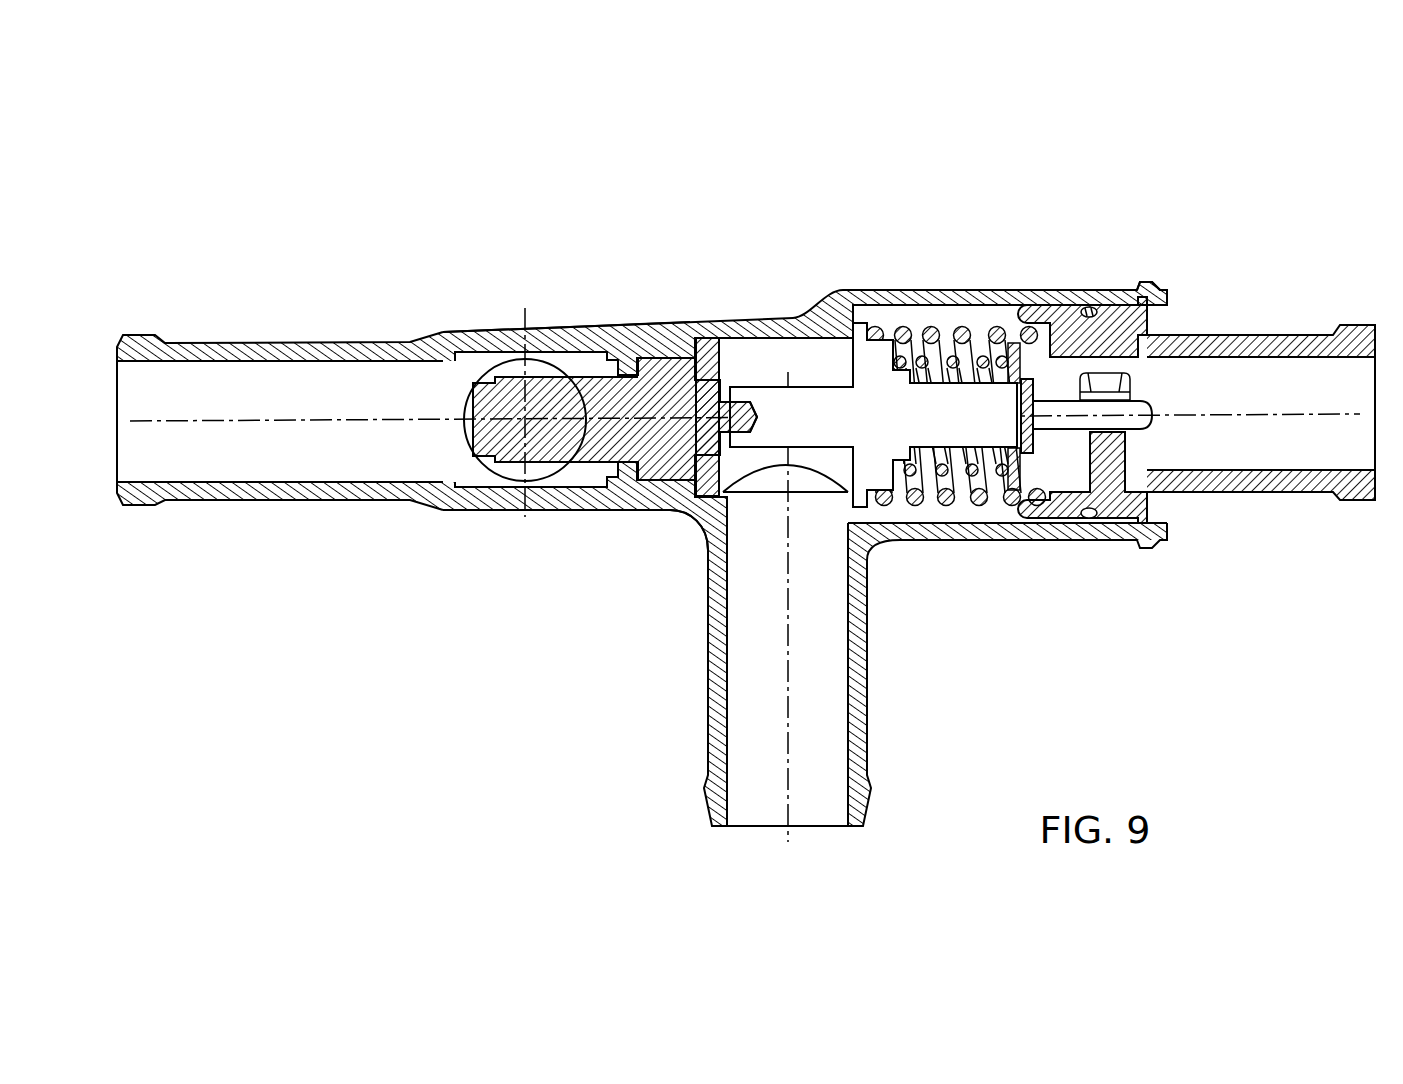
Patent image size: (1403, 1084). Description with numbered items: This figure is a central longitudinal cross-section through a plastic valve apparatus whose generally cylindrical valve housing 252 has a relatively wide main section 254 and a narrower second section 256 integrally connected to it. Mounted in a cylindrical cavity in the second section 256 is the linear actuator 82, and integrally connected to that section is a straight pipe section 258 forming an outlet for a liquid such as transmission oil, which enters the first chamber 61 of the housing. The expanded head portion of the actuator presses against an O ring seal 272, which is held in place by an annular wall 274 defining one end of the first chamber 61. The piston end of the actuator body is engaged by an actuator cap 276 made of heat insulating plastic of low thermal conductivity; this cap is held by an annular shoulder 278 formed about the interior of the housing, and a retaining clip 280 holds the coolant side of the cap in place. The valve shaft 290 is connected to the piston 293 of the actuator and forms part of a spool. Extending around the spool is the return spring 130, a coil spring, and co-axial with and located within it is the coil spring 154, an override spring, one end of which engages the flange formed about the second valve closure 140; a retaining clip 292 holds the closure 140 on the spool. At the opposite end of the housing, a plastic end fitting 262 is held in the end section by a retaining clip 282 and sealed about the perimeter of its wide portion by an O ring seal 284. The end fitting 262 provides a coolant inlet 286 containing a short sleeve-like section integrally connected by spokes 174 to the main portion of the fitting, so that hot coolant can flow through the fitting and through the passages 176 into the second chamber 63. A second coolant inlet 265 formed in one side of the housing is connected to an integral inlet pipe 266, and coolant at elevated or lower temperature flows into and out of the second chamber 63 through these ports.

The straight pipe section 258 is at (283, 350).
The second section 256 is at (577, 332).
The O ring seal 272 is at (632, 335).
The actuator cap 276 is at (664, 330).
The valve housing 252 is at (722, 330).
The retaining clip 280 is at (723, 355).
The valve shaft 290 is at (803, 418).
The piston 293 is at (757, 422).
The retaining clip 292 is at (1023, 380).
The main section 254 is at (1088, 367).
The passages 176 is at (1060, 317).
The O ring seal 284 is at (1095, 303).
The retaining clip 282 is at (1160, 317).
The end fitting 262 is at (1262, 332).
The coolant inlet 286 is at (1133, 437).
The spokes 174 is at (1107, 447).
The second valve closure 140 is at (1017, 540).
The return spring 130 is at (983, 500).
The coil spring 154 is at (935, 508).
The second chamber 63 is at (928, 508).
The second coolant inlet 265 is at (777, 540).
The inlet pipe 266 is at (718, 738).
The first chamber 61 is at (482, 478).
The linear actuator 82 is at (575, 462).
The annular wall 274 is at (610, 487).
The annular shoulder 278 is at (680, 490).